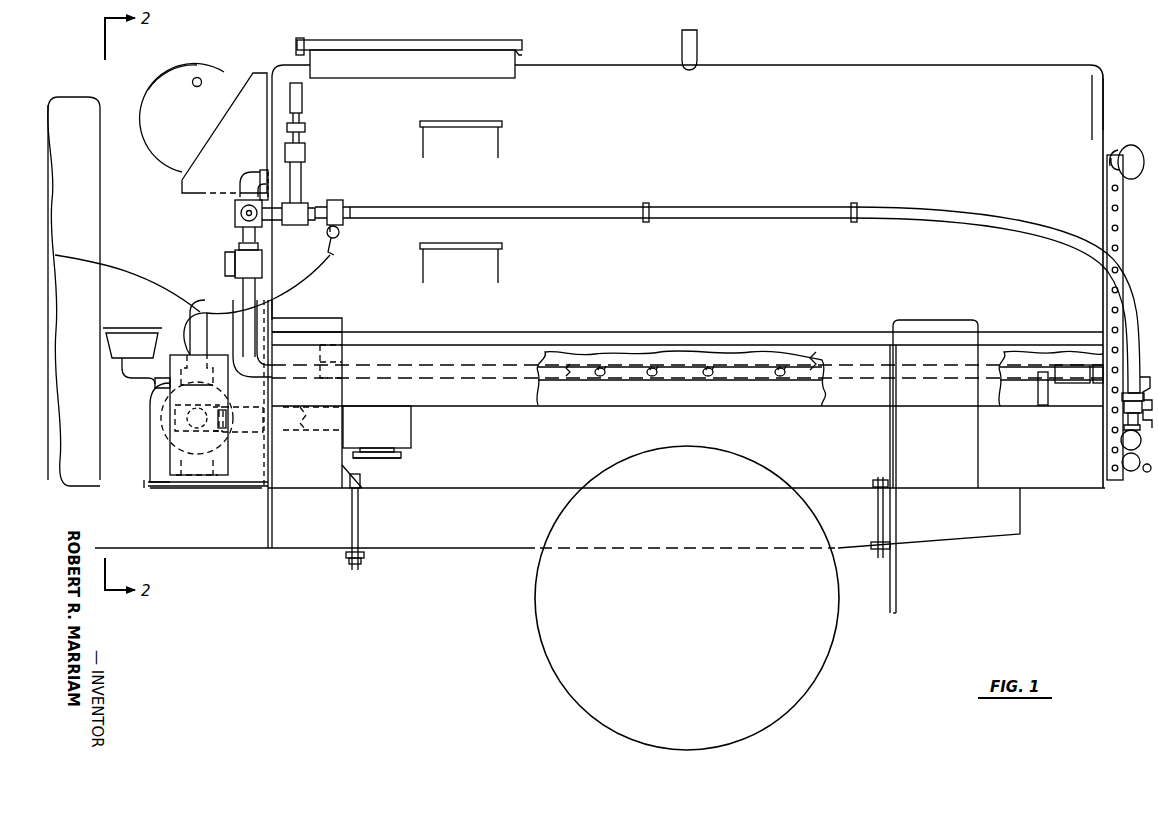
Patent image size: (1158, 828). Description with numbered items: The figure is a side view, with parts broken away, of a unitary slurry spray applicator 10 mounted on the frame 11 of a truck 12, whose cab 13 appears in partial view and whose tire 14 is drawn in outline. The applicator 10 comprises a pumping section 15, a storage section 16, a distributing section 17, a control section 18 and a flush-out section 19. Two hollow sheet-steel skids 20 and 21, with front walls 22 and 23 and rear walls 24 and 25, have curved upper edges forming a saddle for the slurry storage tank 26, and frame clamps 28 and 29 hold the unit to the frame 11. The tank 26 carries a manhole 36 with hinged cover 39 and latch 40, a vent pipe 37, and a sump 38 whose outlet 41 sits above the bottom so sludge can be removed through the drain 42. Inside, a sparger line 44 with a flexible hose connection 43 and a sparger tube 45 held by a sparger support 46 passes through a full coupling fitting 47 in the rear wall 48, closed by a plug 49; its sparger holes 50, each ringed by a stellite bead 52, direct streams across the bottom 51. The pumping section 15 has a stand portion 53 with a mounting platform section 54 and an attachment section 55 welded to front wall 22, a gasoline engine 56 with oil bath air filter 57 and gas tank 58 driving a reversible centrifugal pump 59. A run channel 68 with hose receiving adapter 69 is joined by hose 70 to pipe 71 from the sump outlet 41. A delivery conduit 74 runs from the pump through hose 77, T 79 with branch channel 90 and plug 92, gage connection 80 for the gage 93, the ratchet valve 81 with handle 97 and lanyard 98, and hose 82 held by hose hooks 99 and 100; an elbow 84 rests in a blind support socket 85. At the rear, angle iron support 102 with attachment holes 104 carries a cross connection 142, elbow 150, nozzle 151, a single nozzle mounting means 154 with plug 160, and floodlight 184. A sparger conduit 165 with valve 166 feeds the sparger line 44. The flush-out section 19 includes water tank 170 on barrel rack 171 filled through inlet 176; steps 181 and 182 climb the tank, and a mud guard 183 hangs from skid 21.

The slurry spray applicator 10 is at (1112, 31).
The frame 11 is at (600, 518).
The truck 12 is at (46, 155).
The truck cab 13 is at (74, 291).
The truck tire 14 is at (687, 598).
The pumping section 15 is at (150, 488).
The storage section 16 is at (930, 50).
The distributing section 17 is at (1138, 505).
The control section 18 is at (322, 172).
The flush-out section 19 is at (144, 95).
The mounting skid 20 is at (322, 470).
The mounting skid 21 is at (935, 404).
The front wall 22 is at (273, 484).
The front wall 23 is at (890, 452).
The rear wall 24 is at (345, 460).
The rear wall 25 is at (979, 455).
The slurry storage tank 26 is at (809, 121).
The frame clamp 28 is at (360, 528).
The frame clamp 29 is at (877, 520).
The manhole 36 is at (412, 64).
The vent pipe 37 is at (698, 48).
The sump 38 is at (377, 427).
The hinged cover 39 is at (330, 40).
The latch 40 is at (296, 44).
The outlet 41 is at (330, 423).
The drain 42 is at (402, 461).
The flexible hose connection 43 is at (1072, 374).
The sparger line 44 is at (547, 372).
The sparger tube 45 is at (812, 375).
The sparger support 46 is at (1043, 400).
The full coupling fitting 47 is at (1098, 362).
The rear wall 48 is at (1105, 92).
The plug 49 is at (1100, 366).
The sparger holes 50 is at (707, 378).
The bottom 51 is at (786, 393).
The stellite bead 52 is at (605, 378).
The stand portion 53 is at (262, 500).
The mounting platform section 54 is at (242, 490).
The attachment section 55 is at (255, 392).
The gasoline engine 56 is at (160, 462).
The oil bath air filter 57 is at (132, 356).
The gas tank 58 is at (211, 415).
The reversible centrifugal pump 59 is at (197, 415).
The run channel 68 is at (175, 406).
The hose receiving adapter 69 is at (226, 410).
The hose 70 is at (238, 419).
The pipe 71 is at (306, 428).
The delivery conduit 74 is at (476, 206).
The hose 77 is at (190, 291).
The T 79 is at (266, 242).
The gage connection 80 is at (298, 214).
The ratchet valve 81 is at (340, 200).
The hose 82 is at (404, 207).
The elbow 84 is at (240, 188).
The blind support socket 85 is at (263, 172).
The branch channel 90 is at (262, 220).
The plug 92 is at (235, 210).
The gage 93 is at (316, 143).
The valve handle 97 is at (334, 247).
The lanyard 98 is at (312, 262).
The hose hook 99 is at (648, 222).
The hose hook 100 is at (858, 222).
The angle iron support 102 is at (1119, 190).
The attachment holes 104 is at (1118, 230).
The cross connection 142 is at (1122, 440).
The elbow 150 is at (1139, 448).
The nozzle 151 is at (1148, 377).
The single nozzle mounting means 154 is at (1141, 480).
The plug 160 is at (687, 353).
The sparger conduit 165 is at (232, 282).
The valve 166 is at (244, 260).
The water tank 170 is at (182, 117).
The barrel rack 171 is at (224, 133).
The inlet 176 is at (194, 78).
The step 181 is at (502, 246).
The step 182 is at (470, 121).
The mud guard 183 is at (898, 592).
The floodlight 184 is at (1131, 146).